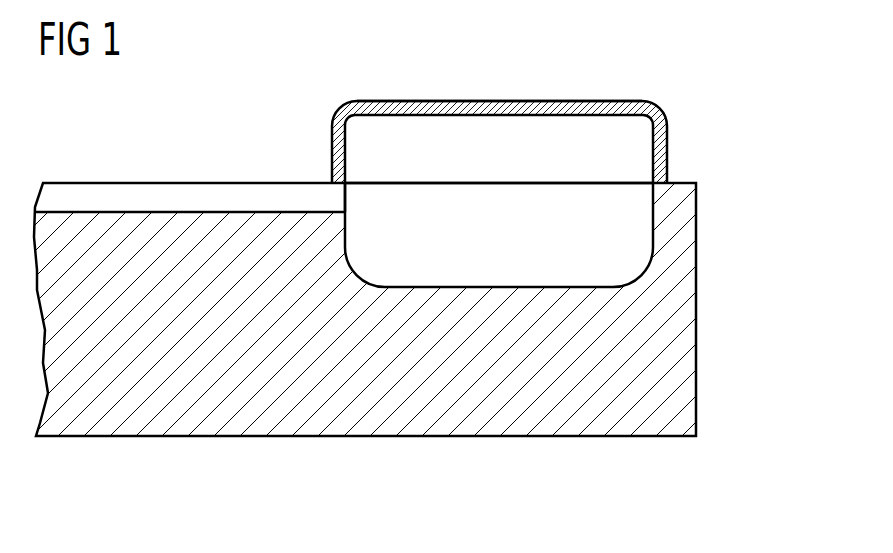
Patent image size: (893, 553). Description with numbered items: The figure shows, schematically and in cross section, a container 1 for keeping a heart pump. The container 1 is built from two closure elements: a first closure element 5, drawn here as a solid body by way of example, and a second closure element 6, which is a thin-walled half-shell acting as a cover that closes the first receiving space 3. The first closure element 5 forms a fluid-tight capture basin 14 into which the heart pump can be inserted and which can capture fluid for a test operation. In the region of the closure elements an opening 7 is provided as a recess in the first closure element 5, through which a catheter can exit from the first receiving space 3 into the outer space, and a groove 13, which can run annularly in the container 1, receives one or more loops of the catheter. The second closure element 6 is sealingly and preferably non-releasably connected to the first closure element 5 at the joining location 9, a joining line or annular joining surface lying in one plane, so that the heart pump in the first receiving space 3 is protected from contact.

The container 1 is at (737, 229).
The first receiving space 3 is at (418, 130).
The first closure element 5 is at (698, 307).
The second closure element 6 is at (615, 101).
The opening 7 is at (336, 198).
The joining location 9 is at (597, 183).
The groove 13 is at (133, 183).
The capture basin 14 is at (640, 273).